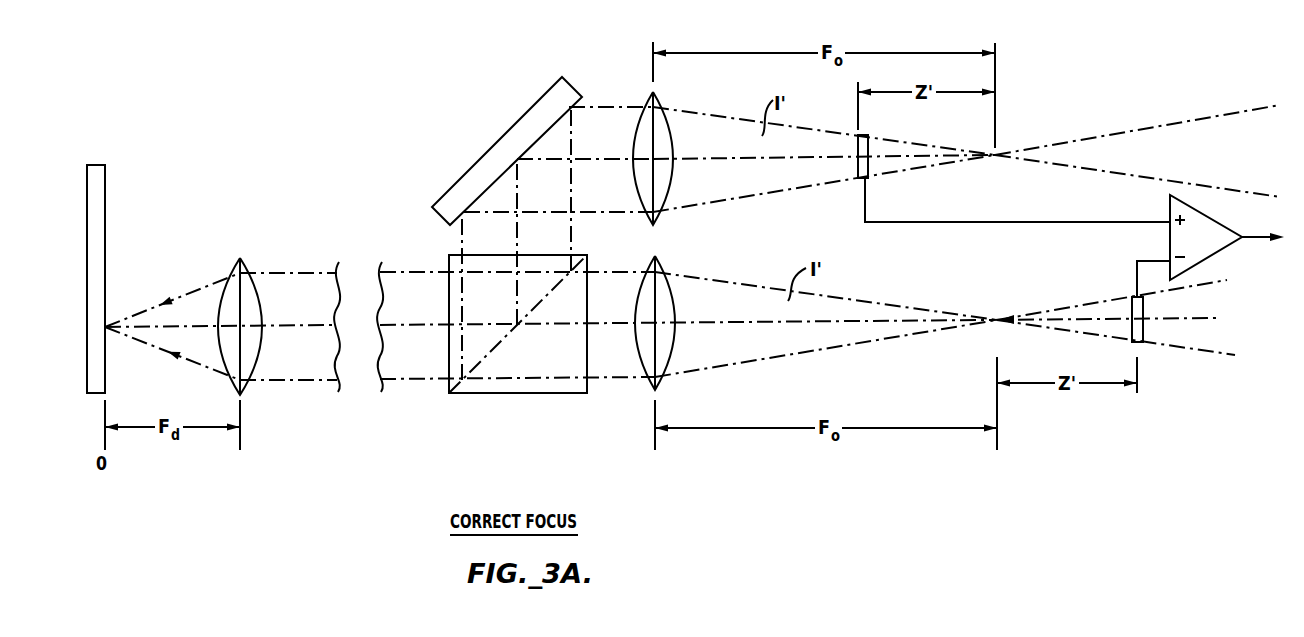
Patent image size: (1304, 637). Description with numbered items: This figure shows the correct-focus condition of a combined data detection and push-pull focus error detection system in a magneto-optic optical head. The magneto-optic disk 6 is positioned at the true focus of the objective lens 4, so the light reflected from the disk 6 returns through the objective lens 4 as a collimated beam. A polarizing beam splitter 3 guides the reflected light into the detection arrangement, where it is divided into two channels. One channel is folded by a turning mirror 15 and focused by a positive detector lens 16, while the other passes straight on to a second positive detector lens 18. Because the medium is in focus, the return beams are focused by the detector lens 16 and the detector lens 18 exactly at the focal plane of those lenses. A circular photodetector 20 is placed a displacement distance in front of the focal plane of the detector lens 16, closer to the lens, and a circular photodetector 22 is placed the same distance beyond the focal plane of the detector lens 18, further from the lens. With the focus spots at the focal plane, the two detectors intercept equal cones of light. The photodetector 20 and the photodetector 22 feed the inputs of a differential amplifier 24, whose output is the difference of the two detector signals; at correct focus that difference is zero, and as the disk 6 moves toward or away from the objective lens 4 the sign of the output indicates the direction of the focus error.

The magneto-optic disk 6 is at (115, 238).
The objective lens 4 is at (256, 370).
The polarizing beam splitter 3 is at (587, 393).
The turning mirror 15 is at (493, 146).
The positive detector lens 16 is at (671, 150).
The positive detector lens 18 is at (674, 310).
The photodetector 20 is at (869, 143).
The photodetector 22 is at (1143, 327).
The differential amplifier 24 is at (1216, 253).